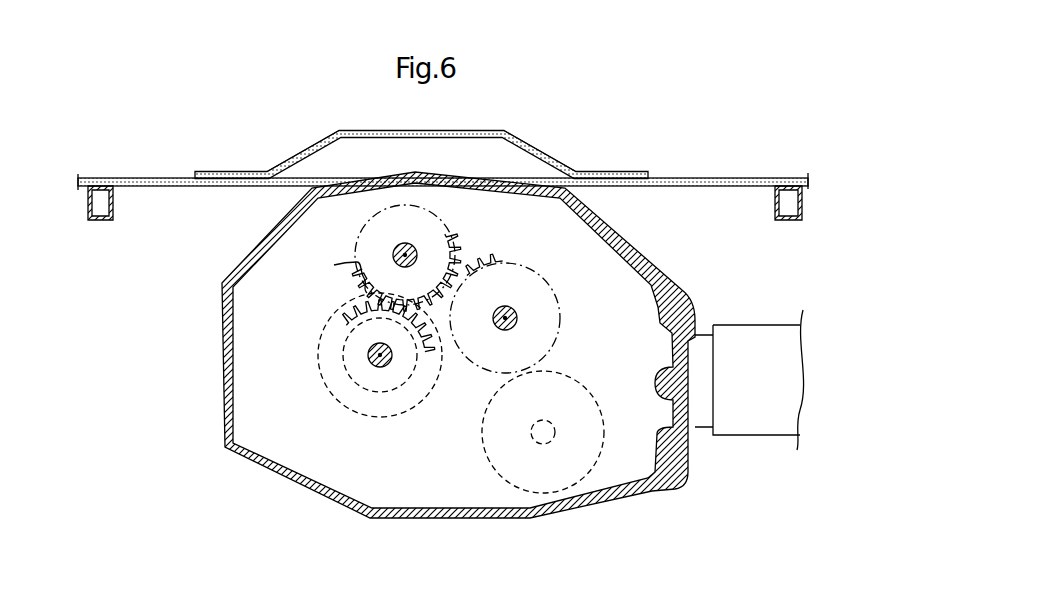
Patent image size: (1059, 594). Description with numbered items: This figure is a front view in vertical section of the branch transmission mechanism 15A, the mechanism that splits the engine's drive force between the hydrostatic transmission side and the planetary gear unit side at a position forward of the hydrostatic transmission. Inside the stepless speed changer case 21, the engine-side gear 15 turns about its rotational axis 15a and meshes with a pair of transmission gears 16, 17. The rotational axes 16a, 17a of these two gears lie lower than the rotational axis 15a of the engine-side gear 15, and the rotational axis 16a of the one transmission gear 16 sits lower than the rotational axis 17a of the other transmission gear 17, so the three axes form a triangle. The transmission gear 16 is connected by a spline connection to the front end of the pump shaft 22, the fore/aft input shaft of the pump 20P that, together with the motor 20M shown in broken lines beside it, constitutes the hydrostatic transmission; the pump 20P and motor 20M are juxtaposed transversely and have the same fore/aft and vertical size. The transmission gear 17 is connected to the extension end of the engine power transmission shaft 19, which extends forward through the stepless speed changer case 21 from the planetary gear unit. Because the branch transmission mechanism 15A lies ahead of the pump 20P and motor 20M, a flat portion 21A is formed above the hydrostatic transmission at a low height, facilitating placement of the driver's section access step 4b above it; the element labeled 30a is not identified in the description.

The driver's section access step 4b is at (706, 178).
The flat portion 21A is at (386, 172).
The stepless speed changer case 21 is at (222, 345).
The engine-side gear 15 is at (458, 250).
The rotational axis of the engine-side gear 15a is at (394, 250).
The branch transmission mechanism 15A is at (288, 295).
The spring 30a is at (330, 273).
The transmission gear 16 is at (356, 316).
The rotational axis of the transmission gear 16a is at (362, 367).
The pump shaft 22 is at (368, 353).
The pump 20P is at (393, 420).
The transmission gear 17 is at (484, 260).
The rotational axis of the transmission gear 17a is at (520, 314).
The engine power transmission shaft 19 is at (516, 324).
The motor 20M is at (582, 478).